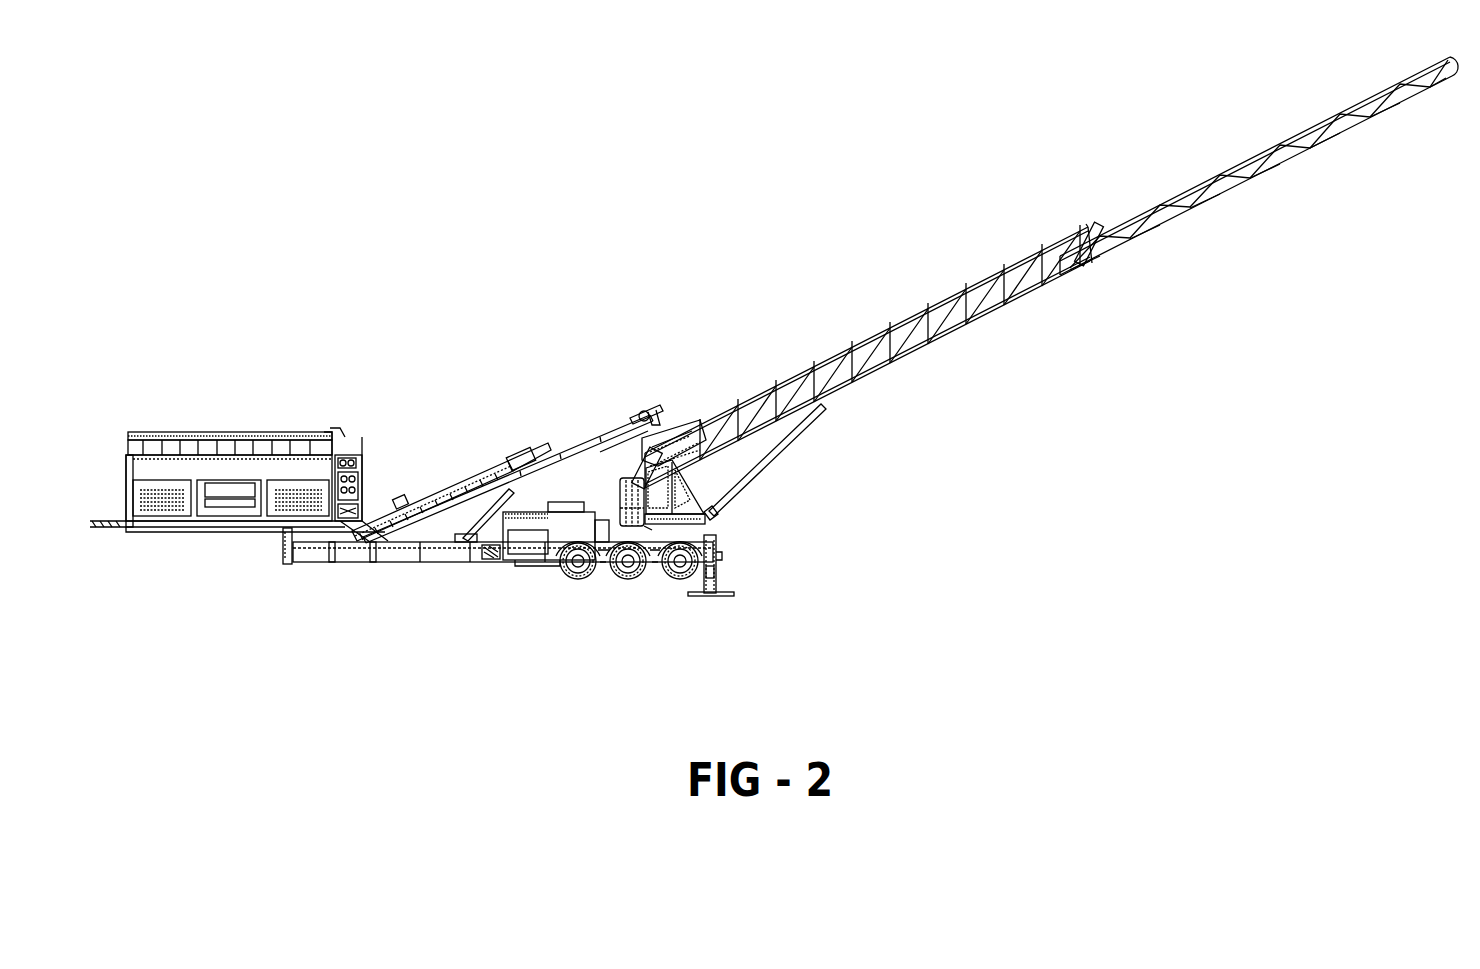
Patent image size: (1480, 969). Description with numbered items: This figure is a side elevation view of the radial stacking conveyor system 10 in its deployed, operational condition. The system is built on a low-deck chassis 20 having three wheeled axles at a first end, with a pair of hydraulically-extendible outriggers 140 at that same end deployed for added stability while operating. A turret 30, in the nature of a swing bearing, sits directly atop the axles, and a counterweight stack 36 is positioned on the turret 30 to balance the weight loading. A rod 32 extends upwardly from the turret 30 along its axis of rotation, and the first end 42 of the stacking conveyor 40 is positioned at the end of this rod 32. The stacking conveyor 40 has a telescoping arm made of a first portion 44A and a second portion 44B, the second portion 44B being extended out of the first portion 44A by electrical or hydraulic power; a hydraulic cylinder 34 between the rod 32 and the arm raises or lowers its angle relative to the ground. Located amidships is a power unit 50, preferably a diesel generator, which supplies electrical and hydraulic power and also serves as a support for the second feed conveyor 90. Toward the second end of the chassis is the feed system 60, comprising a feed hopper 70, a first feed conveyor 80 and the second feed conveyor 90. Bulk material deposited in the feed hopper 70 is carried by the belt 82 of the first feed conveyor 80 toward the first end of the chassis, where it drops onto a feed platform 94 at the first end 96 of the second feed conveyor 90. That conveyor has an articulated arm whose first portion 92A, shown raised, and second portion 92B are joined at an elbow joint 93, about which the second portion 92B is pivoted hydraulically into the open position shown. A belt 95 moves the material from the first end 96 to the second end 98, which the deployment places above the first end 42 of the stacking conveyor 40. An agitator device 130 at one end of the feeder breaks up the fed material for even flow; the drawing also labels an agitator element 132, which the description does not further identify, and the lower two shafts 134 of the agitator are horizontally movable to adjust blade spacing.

The radial stacking conveyor system 10 is at (632, 246).
The chassis 20 is at (427, 553).
The turret 30 is at (716, 540).
The rod 32 is at (700, 495).
The hydraulic cylinder 34 is at (790, 447).
The counterweight stack 36 is at (633, 527).
The stacking conveyor 40 is at (1027, 297).
The first end of stacking conveyor 42 is at (668, 444).
The first portion of telescoping arm 44A is at (932, 308).
The second portion of telescoping arm 44B is at (1185, 192).
The power unit 50 is at (562, 512).
The feed system 60 is at (138, 432).
The feed hopper 70 is at (205, 432).
The first feed conveyor 80 is at (203, 528).
The belt 82 is at (232, 520).
The second feed conveyor 90 is at (573, 443).
The first portion of articulated arm 92A is at (438, 490).
The second portion of articulated arm 92B is at (540, 455).
The elbow joint 93 is at (511, 466).
The feed platform 94 is at (400, 500).
The belt 95 is at (332, 555).
The first end of second feed conveyor 96 is at (373, 553).
The second end of second feed conveyor 98 is at (643, 414).
The agitator device 130 is at (347, 437).
The hydraulic manifold 132 is at (364, 437).
The lower shafts 134 is at (353, 437).
The hydraulically-extendible outriggers 140 is at (722, 587).